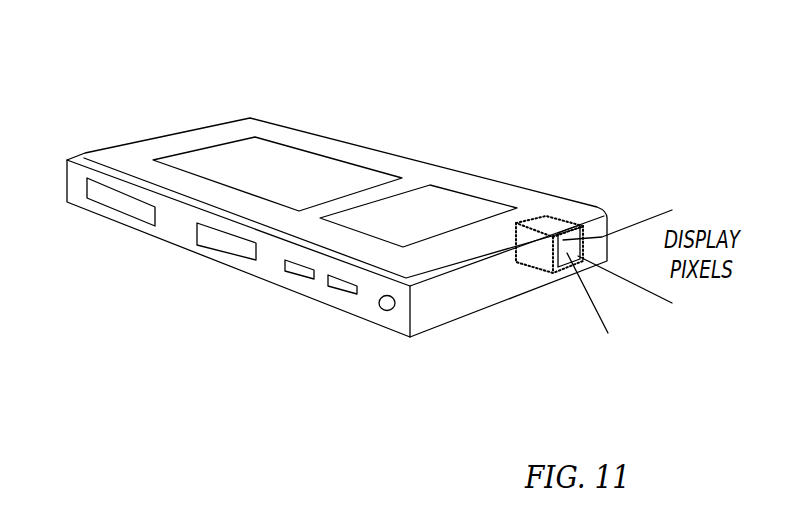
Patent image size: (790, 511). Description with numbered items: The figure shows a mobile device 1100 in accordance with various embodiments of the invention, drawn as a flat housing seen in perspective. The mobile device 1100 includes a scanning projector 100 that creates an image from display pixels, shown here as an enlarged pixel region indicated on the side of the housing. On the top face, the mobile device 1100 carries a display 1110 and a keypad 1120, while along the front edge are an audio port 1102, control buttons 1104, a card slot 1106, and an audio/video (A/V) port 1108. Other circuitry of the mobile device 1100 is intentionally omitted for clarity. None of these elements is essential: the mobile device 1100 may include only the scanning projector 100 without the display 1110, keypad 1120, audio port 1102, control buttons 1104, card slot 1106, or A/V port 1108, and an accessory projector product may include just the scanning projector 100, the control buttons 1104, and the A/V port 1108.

The mobile device 1100 is at (634, 70).
The keypad 1120 is at (288, 159).
The display 1110 is at (428, 197).
The scanning projector 100 is at (550, 217).
The audio/video (A/V) port 1108 is at (107, 197).
The card slot 1106 is at (215, 240).
The control buttons 1104 is at (335, 288).
The audio port 1102 is at (383, 311).